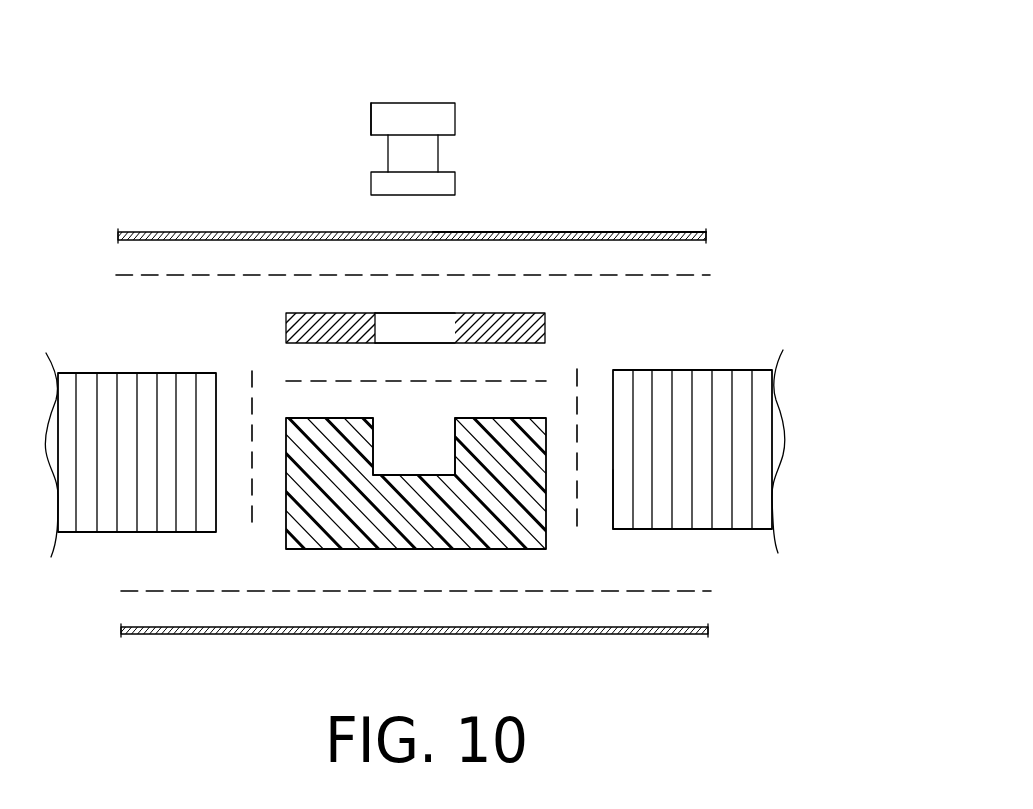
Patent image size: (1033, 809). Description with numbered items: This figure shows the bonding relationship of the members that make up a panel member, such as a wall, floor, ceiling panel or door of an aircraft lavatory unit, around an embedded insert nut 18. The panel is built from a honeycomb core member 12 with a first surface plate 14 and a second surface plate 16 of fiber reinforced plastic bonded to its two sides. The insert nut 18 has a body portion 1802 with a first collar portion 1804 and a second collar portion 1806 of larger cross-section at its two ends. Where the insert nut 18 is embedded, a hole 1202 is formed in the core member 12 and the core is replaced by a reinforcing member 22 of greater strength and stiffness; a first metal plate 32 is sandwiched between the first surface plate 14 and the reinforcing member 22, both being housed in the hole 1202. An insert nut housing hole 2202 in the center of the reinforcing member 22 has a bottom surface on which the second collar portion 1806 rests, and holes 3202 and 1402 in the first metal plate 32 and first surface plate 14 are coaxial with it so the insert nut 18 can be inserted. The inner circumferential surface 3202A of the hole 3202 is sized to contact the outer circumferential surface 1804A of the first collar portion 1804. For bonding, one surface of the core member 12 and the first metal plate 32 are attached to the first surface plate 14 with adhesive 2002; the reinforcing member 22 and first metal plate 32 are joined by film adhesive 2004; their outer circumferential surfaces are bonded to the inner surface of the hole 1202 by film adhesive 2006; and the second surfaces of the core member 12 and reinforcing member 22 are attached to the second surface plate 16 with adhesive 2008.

The insert nut 18 is at (398, 110).
The first collar portion 1804 is at (452, 117).
The outer circumferential surface 1804A is at (368, 120).
The body portion 1802 is at (422, 150).
The second collar portion 1806 is at (452, 182).
The first surface plate 14 is at (420, 183).
The hole 1402 is at (433, 232).
The adhesive 2002 is at (678, 272).
The first metal plate 32 is at (410, 258).
The hole 3202 is at (412, 323).
The inner circumferential surface 3202A is at (375, 318).
The film adhesive 2004 is at (293, 377).
The film adhesive 2006 is at (248, 382).
The adhesive 2008 is at (180, 593).
The reinforcing member 22 is at (407, 545).
The insert nut housing hole 2202 is at (372, 447).
The core member 12 is at (681, 480).
The hole 1202 is at (610, 507).
The second surface plate 16 is at (653, 635).